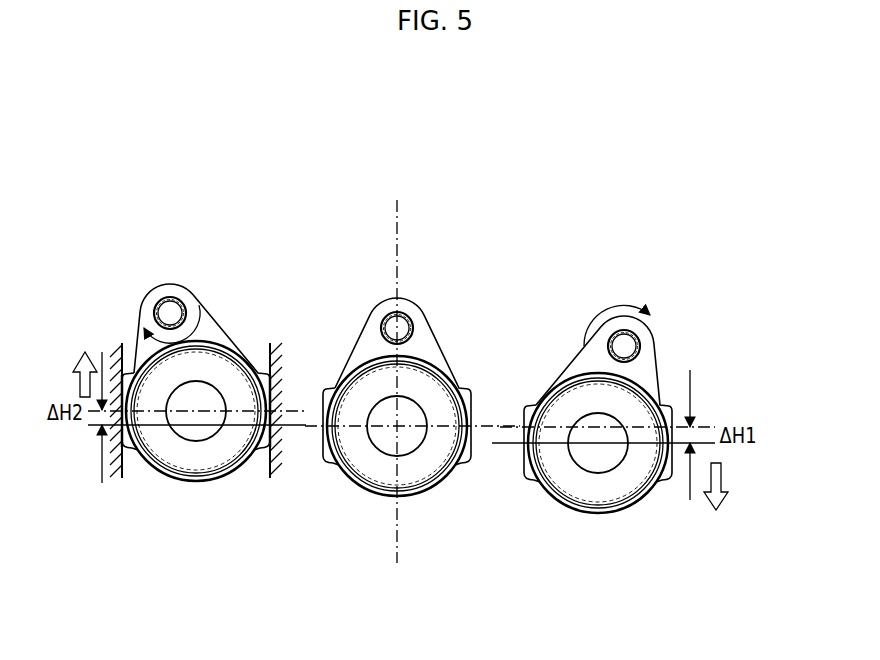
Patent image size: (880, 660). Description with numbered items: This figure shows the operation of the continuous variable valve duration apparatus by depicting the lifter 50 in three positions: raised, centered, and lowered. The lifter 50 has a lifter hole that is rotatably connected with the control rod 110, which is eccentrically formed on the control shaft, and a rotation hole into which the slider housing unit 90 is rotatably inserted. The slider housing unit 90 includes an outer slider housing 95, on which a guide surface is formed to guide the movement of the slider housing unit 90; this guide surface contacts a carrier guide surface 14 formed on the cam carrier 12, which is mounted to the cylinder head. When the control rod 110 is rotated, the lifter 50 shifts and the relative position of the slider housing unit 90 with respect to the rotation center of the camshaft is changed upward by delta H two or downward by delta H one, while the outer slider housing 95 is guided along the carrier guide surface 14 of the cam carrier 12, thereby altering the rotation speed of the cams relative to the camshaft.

The control rod 110 is at (172, 308).
The lifter 50 is at (211, 330).
The outer slider housing 95 is at (195, 483).
The slider housing unit 90 is at (228, 522).
The cam carrier 12 is at (122, 470).
The carrier guide surface 14 is at (125, 465).